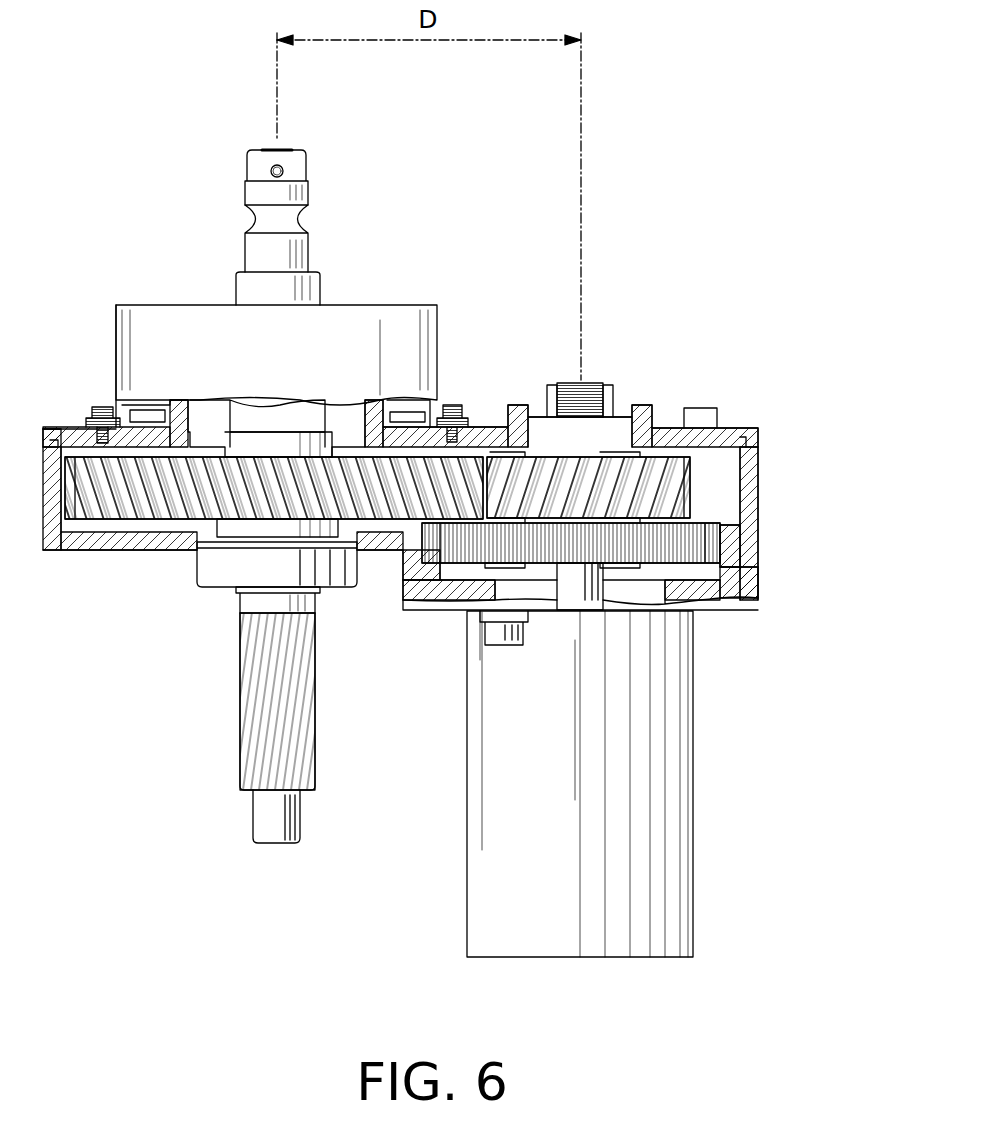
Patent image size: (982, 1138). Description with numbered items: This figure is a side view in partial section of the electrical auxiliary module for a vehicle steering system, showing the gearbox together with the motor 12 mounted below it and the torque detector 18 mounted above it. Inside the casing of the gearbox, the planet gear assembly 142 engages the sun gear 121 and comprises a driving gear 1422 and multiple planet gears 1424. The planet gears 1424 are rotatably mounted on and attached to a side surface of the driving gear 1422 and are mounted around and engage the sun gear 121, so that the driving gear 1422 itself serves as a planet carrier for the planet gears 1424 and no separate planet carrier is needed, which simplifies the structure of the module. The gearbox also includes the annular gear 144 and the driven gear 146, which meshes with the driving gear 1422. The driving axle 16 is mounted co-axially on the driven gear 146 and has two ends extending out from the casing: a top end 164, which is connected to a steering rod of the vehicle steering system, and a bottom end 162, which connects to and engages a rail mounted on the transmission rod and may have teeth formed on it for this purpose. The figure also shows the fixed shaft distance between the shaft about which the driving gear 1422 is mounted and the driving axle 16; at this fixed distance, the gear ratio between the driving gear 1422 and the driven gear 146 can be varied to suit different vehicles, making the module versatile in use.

The motor 12 is at (683, 810).
The sun gear 121 is at (583, 598).
The driving axle 16 is at (286, 222).
The bottom end 162 is at (250, 750).
The top end 164 is at (262, 222).
The torque detector 18 is at (128, 345).
The planet gear assembly 142 is at (633, 458).
The driving gear 1422 is at (675, 462).
The planet gears 1424 is at (693, 548).
The annular gear 144 is at (733, 557).
The driven gear 146 is at (388, 490).